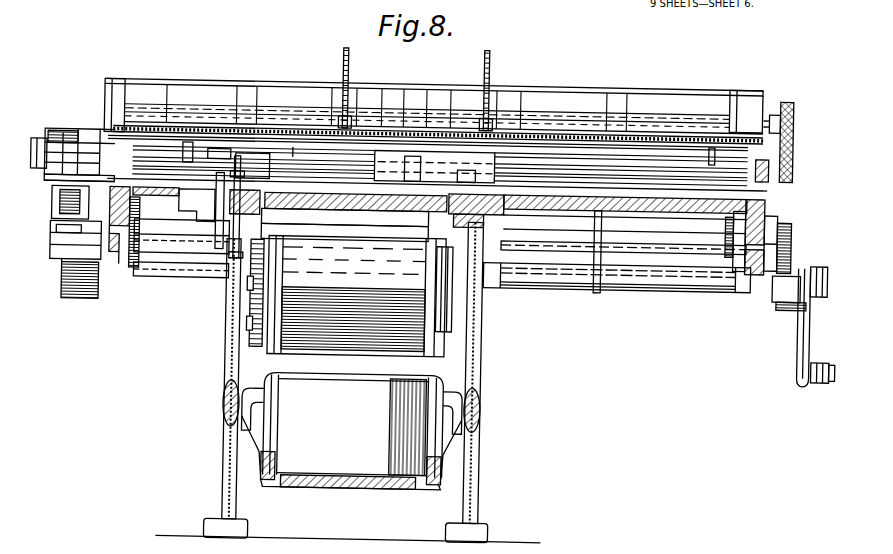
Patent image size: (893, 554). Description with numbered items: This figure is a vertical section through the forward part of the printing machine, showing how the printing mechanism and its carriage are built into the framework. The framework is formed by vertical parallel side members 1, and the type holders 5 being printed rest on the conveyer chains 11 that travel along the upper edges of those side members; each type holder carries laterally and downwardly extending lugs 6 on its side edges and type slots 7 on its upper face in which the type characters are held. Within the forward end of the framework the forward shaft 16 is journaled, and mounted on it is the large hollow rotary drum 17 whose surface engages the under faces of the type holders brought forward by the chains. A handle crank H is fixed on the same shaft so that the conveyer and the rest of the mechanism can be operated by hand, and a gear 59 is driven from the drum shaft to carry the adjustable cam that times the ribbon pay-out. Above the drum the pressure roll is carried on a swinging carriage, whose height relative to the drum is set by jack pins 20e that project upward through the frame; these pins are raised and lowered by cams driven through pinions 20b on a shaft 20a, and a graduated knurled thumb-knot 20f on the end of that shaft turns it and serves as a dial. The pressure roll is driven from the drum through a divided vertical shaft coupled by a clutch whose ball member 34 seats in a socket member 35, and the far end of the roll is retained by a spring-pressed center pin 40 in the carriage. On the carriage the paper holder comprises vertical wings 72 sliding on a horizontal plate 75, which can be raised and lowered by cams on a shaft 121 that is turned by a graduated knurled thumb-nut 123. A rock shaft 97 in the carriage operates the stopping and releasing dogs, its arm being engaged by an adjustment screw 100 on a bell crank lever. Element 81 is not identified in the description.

The side members 1 is at (231, 466).
The type holders 5 is at (353, 424).
The lugs 6 is at (266, 416).
The type slots 7 is at (407, 495).
The endless chains 11 is at (243, 250).
The shaft 16 is at (691, 278).
The rotary drum 17 is at (358, 363).
The shaft 20a is at (666, 243).
The pinions 20b is at (790, 207).
The jack pins 20e is at (134, 212).
The knurled thumb-knot 20f is at (784, 236).
The ball member 34 is at (56, 223).
The socket member 35 is at (53, 200).
The center pin 40 is at (728, 130).
The gear 59 is at (252, 338).
The vertical wings 72 is at (342, 68).
The plate 75 is at (496, 140).
The rail 81 is at (596, 99).
The rock shaft 97 is at (290, 155).
The adjustment screw 100 is at (183, 204).
The shaft 121 is at (588, 228).
The knurled thumb-nut 123 is at (778, 170).
The handle crank H is at (803, 345).